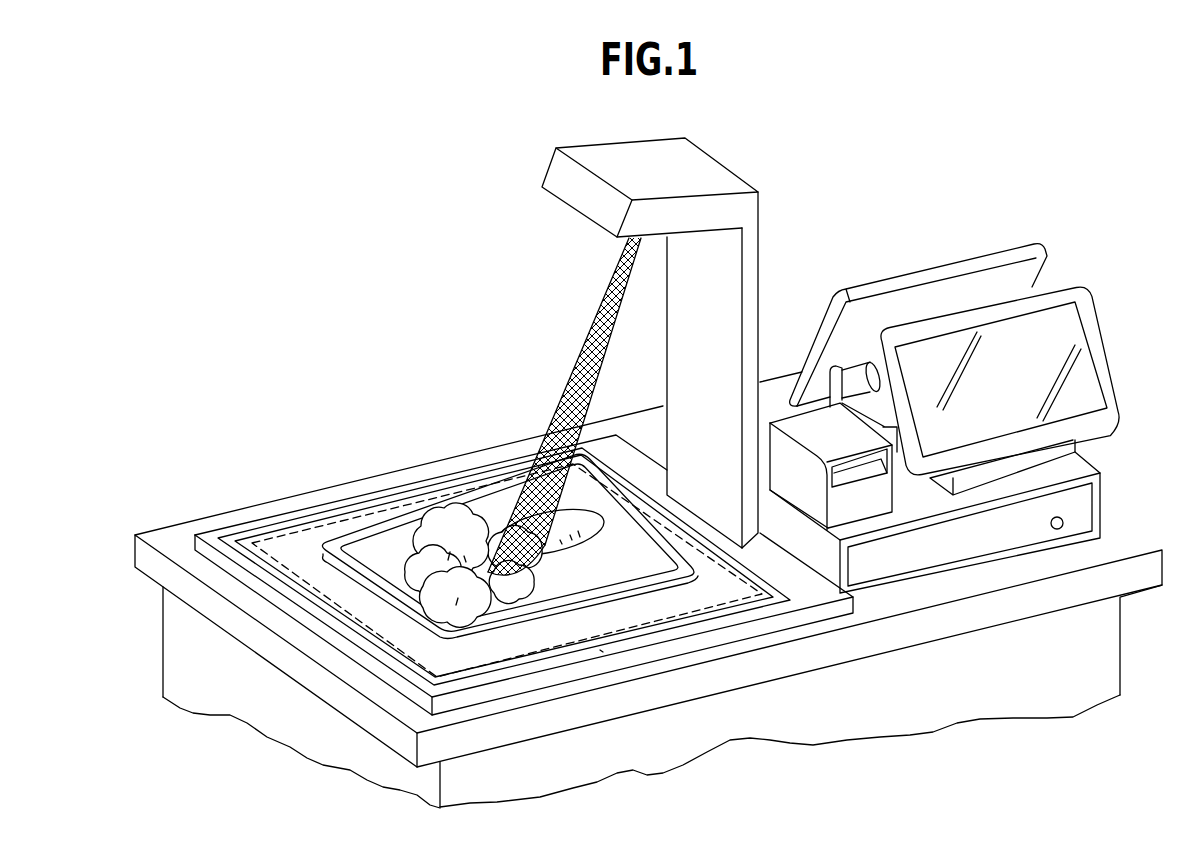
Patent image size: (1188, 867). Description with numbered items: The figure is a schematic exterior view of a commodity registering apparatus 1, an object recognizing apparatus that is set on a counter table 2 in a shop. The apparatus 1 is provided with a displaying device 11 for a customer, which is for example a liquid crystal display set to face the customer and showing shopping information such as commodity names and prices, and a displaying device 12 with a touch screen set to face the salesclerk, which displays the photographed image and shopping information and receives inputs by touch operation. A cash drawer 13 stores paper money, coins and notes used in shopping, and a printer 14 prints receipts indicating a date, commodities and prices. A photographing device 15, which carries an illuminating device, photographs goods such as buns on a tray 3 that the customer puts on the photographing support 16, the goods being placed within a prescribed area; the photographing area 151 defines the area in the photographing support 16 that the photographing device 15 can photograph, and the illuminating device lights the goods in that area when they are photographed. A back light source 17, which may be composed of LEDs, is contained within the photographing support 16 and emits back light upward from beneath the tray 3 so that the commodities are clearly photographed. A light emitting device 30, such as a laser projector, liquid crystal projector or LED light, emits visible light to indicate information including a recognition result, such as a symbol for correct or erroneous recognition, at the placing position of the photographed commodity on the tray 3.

The commodity registering apparatus 1 is at (995, 174).
The counter table 2 is at (893, 645).
The tray 3 is at (392, 520).
The displaying device for a customer 11 is at (870, 283).
The displaying device with a touch screen 12 is at (1068, 338).
The cash drawer 13 is at (1020, 527).
The printer 14 is at (822, 432).
The photographing device 15 is at (552, 163).
The photographing support 16 is at (733, 637).
The back light source 17 is at (600, 650).
The light emitting device 30 is at (625, 242).
The photographing area 151 is at (303, 533).